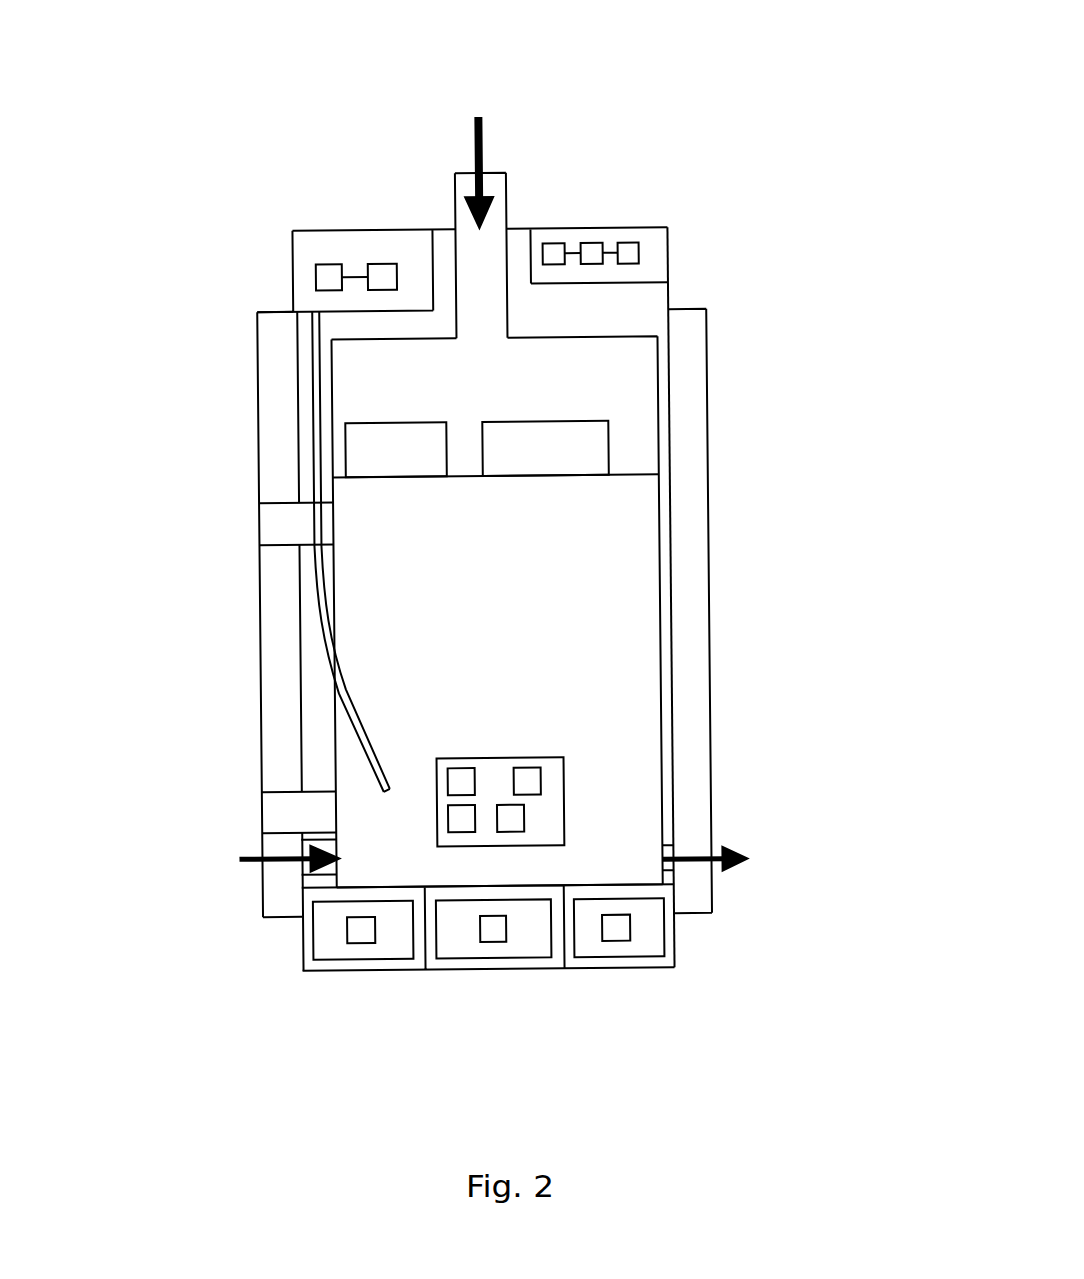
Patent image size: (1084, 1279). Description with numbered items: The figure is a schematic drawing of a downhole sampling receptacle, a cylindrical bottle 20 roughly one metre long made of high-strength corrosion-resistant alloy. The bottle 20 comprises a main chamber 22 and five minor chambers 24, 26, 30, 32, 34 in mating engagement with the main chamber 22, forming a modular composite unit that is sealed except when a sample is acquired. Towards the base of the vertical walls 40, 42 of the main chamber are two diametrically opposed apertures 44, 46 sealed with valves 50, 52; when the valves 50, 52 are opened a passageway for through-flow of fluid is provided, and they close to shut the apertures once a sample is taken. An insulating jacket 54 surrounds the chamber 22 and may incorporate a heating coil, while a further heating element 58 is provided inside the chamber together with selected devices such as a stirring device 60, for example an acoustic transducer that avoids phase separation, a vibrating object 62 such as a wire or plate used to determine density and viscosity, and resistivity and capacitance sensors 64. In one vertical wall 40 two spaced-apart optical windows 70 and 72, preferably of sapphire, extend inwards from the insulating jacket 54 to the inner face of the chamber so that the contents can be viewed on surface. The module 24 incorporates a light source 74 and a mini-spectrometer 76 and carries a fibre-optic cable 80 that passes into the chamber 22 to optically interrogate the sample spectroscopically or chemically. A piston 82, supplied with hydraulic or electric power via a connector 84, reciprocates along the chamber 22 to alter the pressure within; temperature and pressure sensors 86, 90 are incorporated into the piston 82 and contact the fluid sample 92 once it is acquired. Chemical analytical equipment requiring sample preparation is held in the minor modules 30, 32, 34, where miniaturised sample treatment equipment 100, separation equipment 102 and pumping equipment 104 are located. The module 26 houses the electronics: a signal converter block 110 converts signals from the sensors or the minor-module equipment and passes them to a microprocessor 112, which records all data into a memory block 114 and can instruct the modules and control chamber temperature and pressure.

The bottle 20 is at (641, 100).
The main chamber 22 is at (586, 572).
The minor chamber 24 is at (318, 232).
The minor chamber 26 is at (663, 268).
The minor chamber 30 is at (372, 948).
The minor chamber 32 is at (495, 950).
The minor chamber 34 is at (622, 946).
The vertical wall 40 is at (318, 690).
The vertical wall 42 is at (667, 694).
The aperture 44 is at (246, 860).
The aperture 46 is at (695, 866).
The valve 50 is at (322, 880).
The valve 52 is at (672, 845).
The insulating jacket 54 is at (280, 370).
The heating element 58 is at (470, 768).
The stirring device 60 is at (446, 822).
The vibrating object 62 is at (524, 832).
The resistivity and capacitance sensor 64 is at (528, 771).
The optical window 70 is at (280, 516).
The optical window 72 is at (282, 805).
The light source 74 is at (331, 278).
The mini-spectrometer 76 is at (381, 266).
The fibre-optic cable 80 is at (318, 460).
The piston 82 is at (613, 390).
The connector 84 is at (477, 182).
The temperature sensor 86 is at (403, 449).
The pressure sensor 90 is at (595, 440).
The fluid sample 92 is at (602, 642).
The sample treatment equipment 100 is at (346, 926).
The separation equipment 102 is at (476, 930).
The pumping equipment 104 is at (630, 932).
The signal converter block 110 is at (631, 248).
The microprocessor 112 is at (594, 246).
The memory block 114 is at (559, 248).